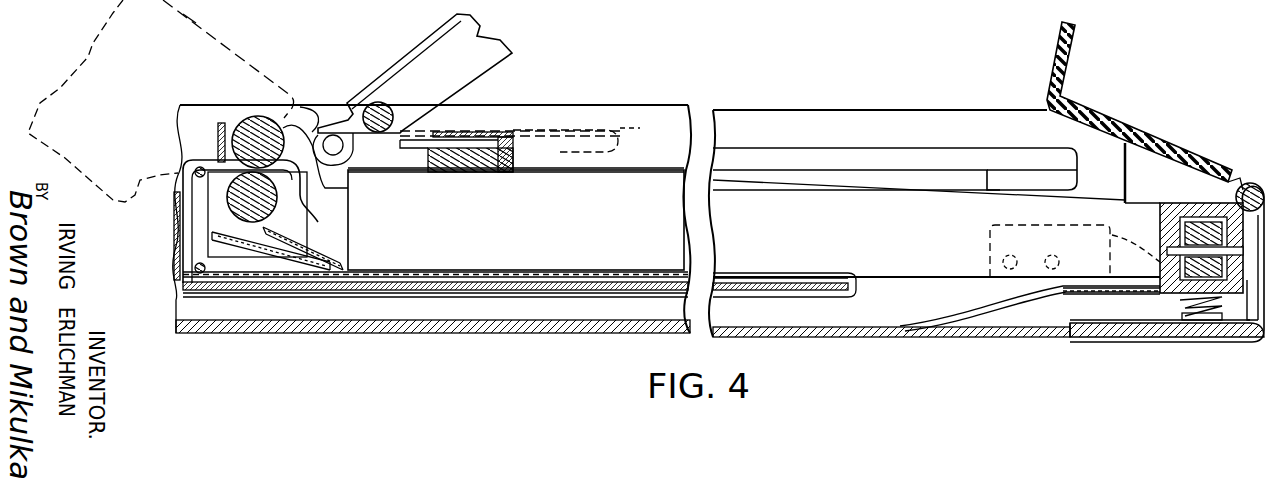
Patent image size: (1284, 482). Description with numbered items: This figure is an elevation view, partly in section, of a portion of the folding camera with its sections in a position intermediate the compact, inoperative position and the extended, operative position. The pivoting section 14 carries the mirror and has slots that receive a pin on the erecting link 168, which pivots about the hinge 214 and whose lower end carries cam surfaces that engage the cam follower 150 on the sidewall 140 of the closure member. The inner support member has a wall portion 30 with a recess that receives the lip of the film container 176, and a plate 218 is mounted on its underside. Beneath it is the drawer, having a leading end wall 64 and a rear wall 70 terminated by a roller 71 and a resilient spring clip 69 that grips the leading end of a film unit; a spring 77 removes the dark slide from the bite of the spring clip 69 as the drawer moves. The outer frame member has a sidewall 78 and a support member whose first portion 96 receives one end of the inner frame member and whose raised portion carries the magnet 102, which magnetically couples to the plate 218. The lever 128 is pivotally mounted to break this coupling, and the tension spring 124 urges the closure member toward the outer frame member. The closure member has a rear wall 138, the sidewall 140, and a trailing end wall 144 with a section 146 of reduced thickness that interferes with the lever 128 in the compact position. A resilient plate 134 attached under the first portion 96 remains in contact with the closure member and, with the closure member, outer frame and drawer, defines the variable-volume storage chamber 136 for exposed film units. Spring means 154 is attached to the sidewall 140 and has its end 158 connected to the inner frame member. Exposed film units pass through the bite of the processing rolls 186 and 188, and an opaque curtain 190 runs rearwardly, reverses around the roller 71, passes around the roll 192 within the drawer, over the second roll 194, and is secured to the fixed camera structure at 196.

The section 14 is at (1085, 95).
The wall portion 30 is at (1180, 205).
The leading end wall 64 is at (178, 226).
The spring clip 69 is at (445, 282).
The rear wall 70 is at (322, 295).
The roller 71 is at (856, 290).
The spring 77 is at (335, 262).
The sidewall 78 is at (1042, 181).
The first portion 96 is at (1100, 276).
The magnet 102 is at (1170, 228).
The tension spring 124 is at (1180, 303).
The lever 128 is at (1258, 192).
The resilient plate 134 is at (1045, 305).
The storage chamber 136 is at (553, 319).
The rear wall 138 is at (970, 337).
The sidewall 140 is at (975, 110).
The trailing end wall 144 is at (1255, 337).
The section of reduced thickness 146 is at (1268, 345).
The cam follower 150 is at (333, 134).
The spring means 154 is at (620, 138).
The end 158 is at (404, 177).
The erecting link 168 is at (437, 48).
The film container 176 is at (877, 200).
The roll 186 is at (256, 117).
The roll 188 is at (278, 196).
The curtain 190 is at (520, 277).
The roll 192 is at (196, 271).
The second roll 194 is at (192, 162).
The fixed camera structure 196 is at (217, 133).
The hinge 214 is at (389, 105).
The plate 218 is at (1203, 195).